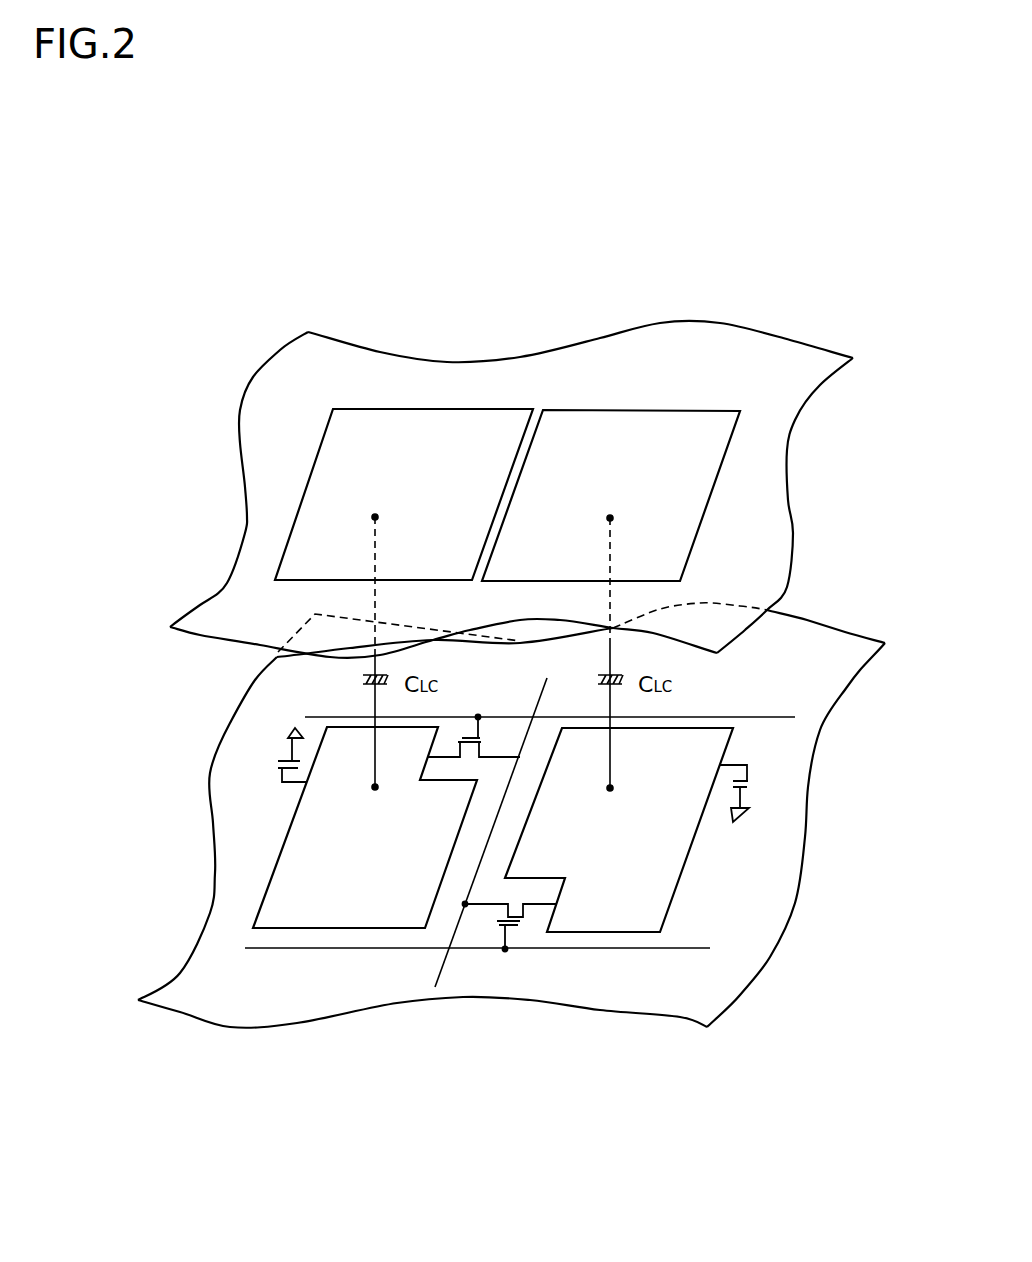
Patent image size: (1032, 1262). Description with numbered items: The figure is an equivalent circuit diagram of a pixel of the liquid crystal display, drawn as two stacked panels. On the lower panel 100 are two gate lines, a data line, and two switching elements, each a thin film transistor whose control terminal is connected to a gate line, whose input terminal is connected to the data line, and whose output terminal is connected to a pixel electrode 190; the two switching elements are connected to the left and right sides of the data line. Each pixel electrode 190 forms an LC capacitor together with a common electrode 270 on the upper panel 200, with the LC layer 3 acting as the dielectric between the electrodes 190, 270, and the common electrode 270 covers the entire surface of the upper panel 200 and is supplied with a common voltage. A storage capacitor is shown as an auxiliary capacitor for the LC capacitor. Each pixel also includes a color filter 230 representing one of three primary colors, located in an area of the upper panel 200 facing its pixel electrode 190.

The LC layer 3 is at (152, 725).
The lower panel 100 is at (522, 819).
The pixel electrode 190 is at (686, 869).
The upper panel 200 is at (812, 518).
The color filter 230 is at (663, 408).
The common electrode 270 is at (800, 468).